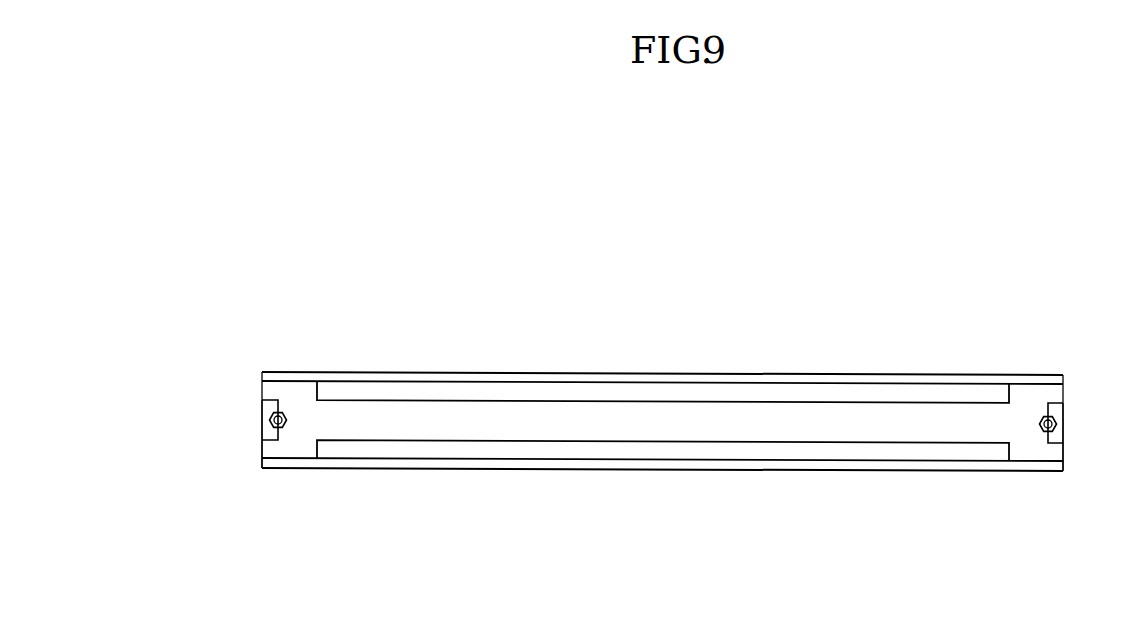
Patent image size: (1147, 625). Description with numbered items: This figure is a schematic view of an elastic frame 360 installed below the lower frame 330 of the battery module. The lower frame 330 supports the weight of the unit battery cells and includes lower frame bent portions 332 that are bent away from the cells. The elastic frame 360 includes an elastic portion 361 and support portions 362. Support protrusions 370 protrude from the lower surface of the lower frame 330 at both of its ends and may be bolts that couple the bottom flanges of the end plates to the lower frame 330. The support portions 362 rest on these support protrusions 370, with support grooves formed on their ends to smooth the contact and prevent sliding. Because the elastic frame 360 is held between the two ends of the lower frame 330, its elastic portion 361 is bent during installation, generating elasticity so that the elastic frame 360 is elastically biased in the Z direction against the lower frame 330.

The lower frame 330 is at (659, 366).
The lower frame bent portions 332 is at (571, 378).
The elastic frame 360 is at (756, 454).
The elastic portion 361 is at (606, 432).
The support portions 362 is at (300, 453).
The support protrusions 370 is at (269, 420).